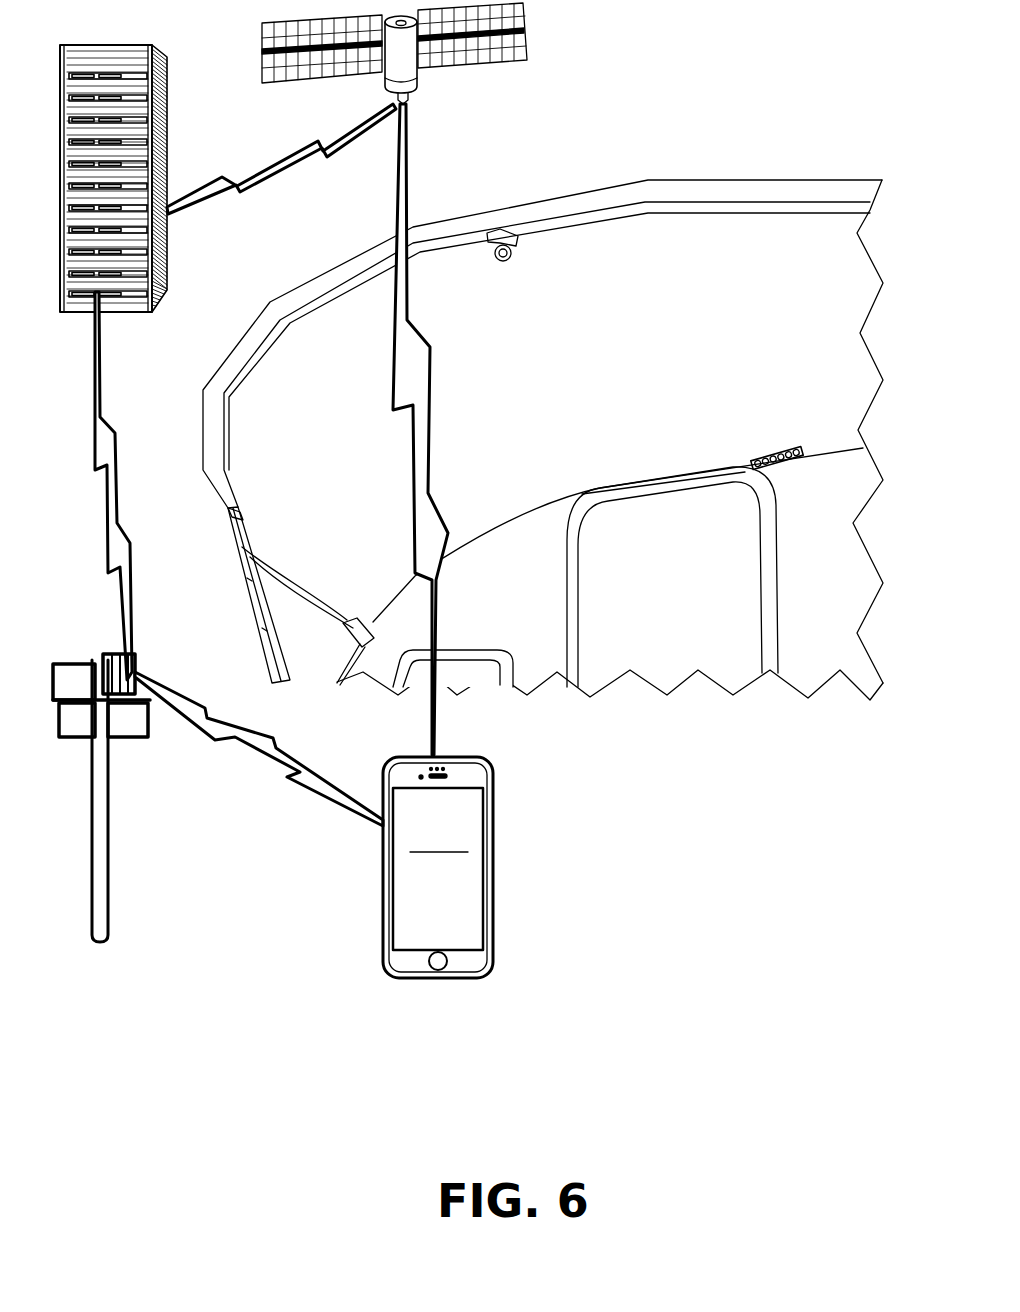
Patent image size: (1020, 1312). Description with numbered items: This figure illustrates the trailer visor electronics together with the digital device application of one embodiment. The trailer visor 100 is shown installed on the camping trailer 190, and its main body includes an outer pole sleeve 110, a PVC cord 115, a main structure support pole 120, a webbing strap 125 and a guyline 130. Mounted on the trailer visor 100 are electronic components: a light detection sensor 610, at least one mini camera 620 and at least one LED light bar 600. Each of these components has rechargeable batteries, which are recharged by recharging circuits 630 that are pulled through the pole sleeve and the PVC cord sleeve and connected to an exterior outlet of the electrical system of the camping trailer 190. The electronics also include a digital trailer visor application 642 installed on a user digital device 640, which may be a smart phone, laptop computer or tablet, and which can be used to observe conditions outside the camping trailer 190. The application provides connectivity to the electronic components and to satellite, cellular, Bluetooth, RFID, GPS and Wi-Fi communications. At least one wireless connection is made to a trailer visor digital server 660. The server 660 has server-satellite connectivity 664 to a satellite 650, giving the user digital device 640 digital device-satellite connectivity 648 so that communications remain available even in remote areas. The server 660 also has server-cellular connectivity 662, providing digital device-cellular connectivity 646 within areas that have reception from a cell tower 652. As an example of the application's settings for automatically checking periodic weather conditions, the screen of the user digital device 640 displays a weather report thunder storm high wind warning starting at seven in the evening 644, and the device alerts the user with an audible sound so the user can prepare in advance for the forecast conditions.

The trailer visor 100 is at (749, 180).
The outer pole sleeve 110 is at (675, 263).
The PVC cord 115 is at (828, 197).
The main structure support pole 120 is at (243, 600).
The webbing strap 125 is at (217, 521).
The guyline 130 is at (262, 673).
The camping trailer 190 is at (847, 558).
The LED light bar 600 is at (797, 448).
The light detection sensor 610 is at (498, 232).
The mini camera 620 is at (340, 637).
The recharging circuits 630 is at (263, 537).
The user digital device 640 is at (490, 863).
The digital trailer visor application 642 is at (473, 820).
The weather report thunder storm high wind warning starting 7 pm 644 is at (465, 883).
The digital device-cellular connectivity 646 is at (262, 752).
The digital device-satellite connectivity 648 is at (405, 205).
The satellite 650 is at (571, 44).
The cell tower 652 is at (90, 820).
The trailer visor digital server 660 is at (165, 97).
The server-cellular connectivity 662 is at (93, 400).
The server-satellite connectivity 664 is at (280, 166).